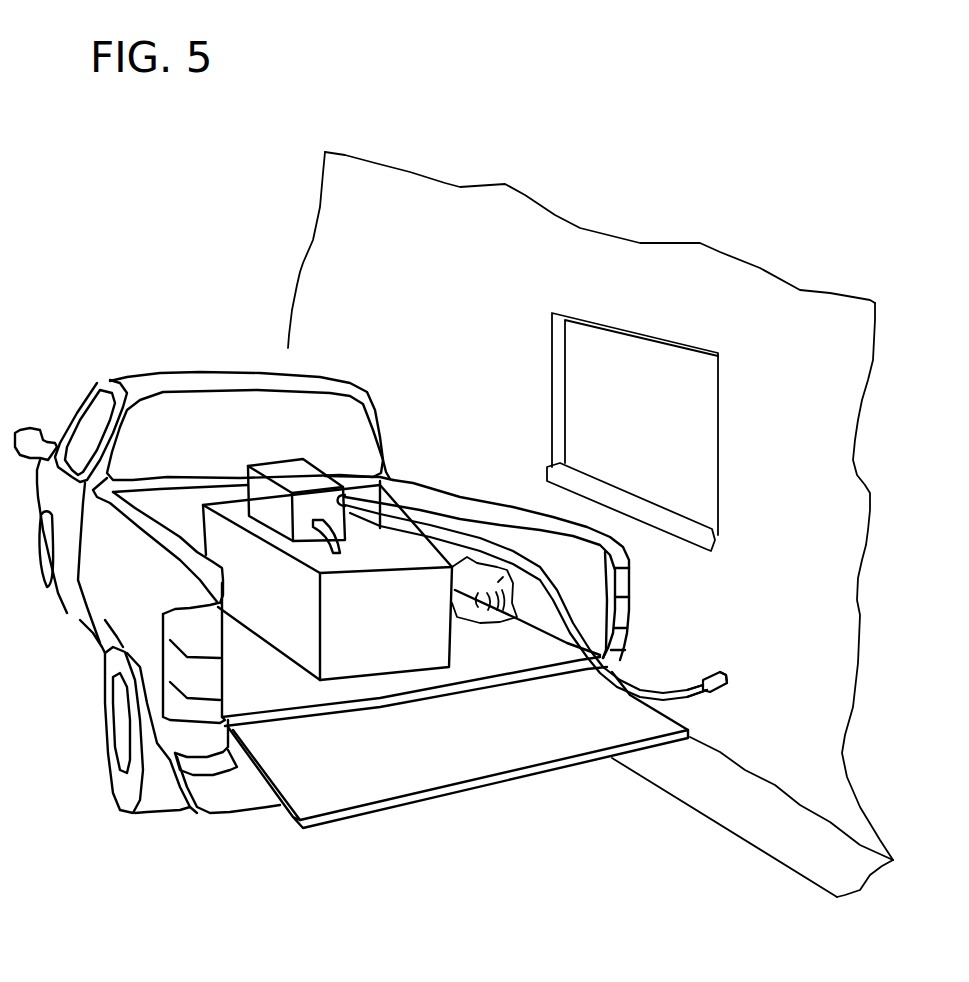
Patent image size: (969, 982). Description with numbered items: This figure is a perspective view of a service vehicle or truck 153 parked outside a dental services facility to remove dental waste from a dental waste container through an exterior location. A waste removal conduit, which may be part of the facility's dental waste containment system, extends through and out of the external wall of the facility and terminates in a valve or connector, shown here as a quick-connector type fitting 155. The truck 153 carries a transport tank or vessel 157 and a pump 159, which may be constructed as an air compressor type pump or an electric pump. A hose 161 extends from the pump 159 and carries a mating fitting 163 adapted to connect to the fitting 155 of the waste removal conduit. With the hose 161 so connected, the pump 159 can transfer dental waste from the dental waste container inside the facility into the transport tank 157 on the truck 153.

The service vehicle or truck 153 is at (194, 385).
The quick-connector type fitting 155 is at (715, 670).
The transport tank or vessel 157 is at (382, 640).
The pump 159 is at (288, 476).
The hose 161 is at (443, 520).
The mating fitting 163 is at (712, 690).